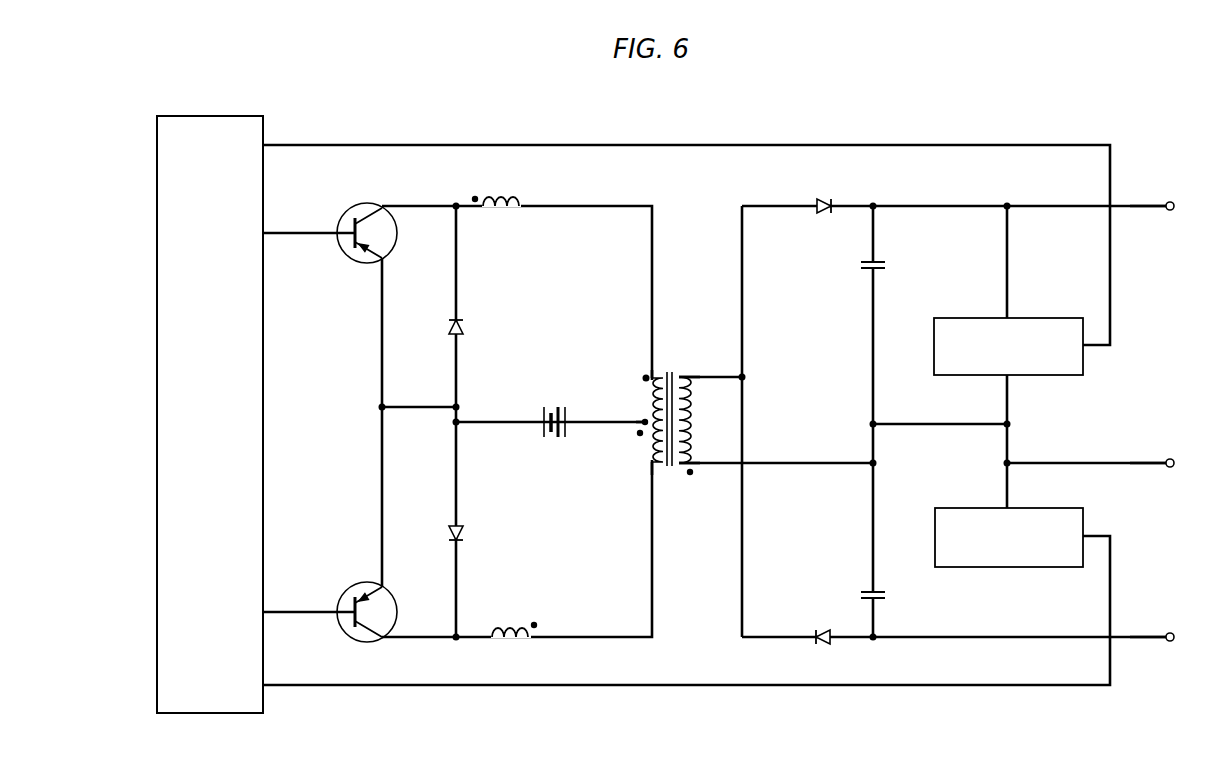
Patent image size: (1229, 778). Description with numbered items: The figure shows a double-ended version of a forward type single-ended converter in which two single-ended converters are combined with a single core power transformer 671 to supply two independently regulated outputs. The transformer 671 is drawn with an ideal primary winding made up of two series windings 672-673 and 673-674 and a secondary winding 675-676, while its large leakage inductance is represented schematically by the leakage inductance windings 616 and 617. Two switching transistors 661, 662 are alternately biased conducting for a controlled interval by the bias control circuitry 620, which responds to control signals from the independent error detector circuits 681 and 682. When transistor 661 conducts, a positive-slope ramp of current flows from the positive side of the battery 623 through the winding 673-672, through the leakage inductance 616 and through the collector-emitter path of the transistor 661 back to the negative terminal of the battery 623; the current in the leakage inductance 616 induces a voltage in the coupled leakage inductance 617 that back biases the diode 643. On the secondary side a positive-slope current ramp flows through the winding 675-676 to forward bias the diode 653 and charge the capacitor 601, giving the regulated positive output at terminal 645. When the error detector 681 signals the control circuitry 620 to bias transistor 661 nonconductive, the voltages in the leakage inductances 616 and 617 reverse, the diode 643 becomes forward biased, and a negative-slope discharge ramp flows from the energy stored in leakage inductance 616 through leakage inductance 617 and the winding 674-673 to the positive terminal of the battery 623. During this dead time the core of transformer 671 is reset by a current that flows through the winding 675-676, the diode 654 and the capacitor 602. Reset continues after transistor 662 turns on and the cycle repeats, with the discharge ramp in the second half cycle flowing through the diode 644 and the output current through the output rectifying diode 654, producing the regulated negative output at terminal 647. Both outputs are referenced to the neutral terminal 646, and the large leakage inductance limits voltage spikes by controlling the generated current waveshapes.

The control circuitry 620 is at (206, 135).
The switching transistor 661 is at (330, 226).
The switching transistor 662 is at (330, 604).
The leakage inductance 616 is at (501, 189).
The leakage inductance 617 is at (511, 619).
The diode 644 is at (477, 327).
The diode 643 is at (475, 532).
The battery 623 is at (551, 410).
The power transformer 671 is at (687, 367).
The primary winding terminal 672 is at (629, 370).
The primary winding center terminal 673 is at (640, 433).
The primary winding terminal 674 is at (631, 469).
The secondary winding terminal 675 is at (706, 459).
The secondary winding terminal 676 is at (706, 389).
The diode 653 is at (822, 192).
The output rectifying diode 654 is at (820, 625).
The capacitor 601 is at (890, 266).
The capacitor 602 is at (892, 597).
The error detector circuit 681 is at (1055, 326).
The error detector circuit 682 is at (1021, 567).
The positive output terminal 645 is at (1156, 194).
The neutral terminal 646 is at (1158, 452).
The negative output terminal 647 is at (1156, 626).